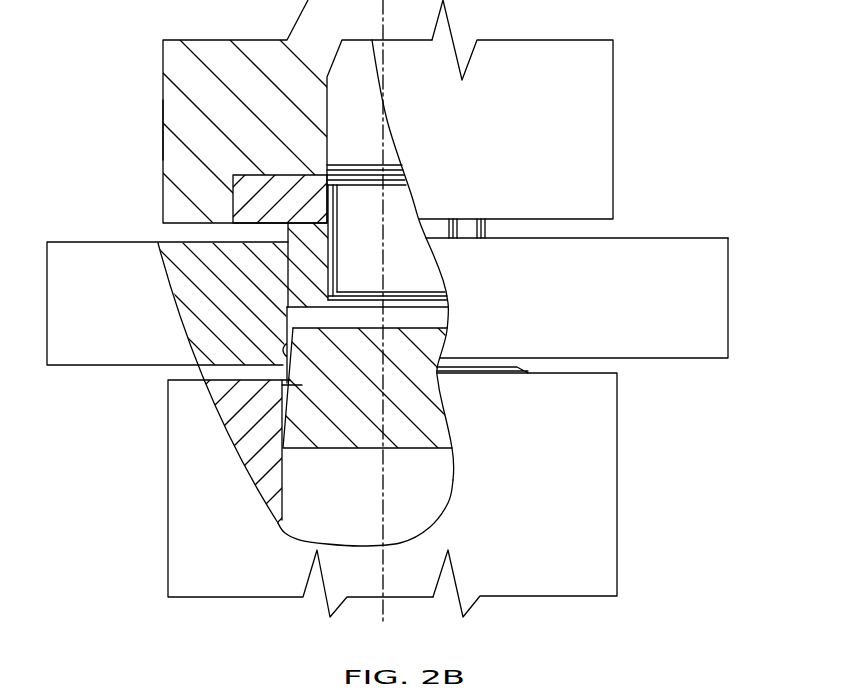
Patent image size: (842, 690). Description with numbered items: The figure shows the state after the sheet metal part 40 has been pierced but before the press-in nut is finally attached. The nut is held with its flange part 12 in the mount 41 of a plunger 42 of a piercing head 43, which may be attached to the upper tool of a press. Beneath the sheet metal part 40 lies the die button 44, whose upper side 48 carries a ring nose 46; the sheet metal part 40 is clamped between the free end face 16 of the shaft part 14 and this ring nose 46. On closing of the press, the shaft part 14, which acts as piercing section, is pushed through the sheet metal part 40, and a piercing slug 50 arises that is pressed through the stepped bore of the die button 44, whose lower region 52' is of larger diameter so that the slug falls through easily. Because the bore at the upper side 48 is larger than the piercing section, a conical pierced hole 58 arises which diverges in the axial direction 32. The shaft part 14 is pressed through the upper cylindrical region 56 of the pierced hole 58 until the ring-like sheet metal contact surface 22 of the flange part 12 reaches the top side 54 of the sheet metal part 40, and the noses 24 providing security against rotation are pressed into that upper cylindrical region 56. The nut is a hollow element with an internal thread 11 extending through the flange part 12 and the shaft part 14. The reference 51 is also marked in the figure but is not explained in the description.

The flange part 12 is at (163, 97).
The plunger 42 is at (163, 148).
The mount 41 is at (231, 195).
The axial direction 32 is at (390, 26).
The piercing head 43 is at (615, 109).
The noses providing security against rotation 24 is at (488, 221).
The top side of the sheet metal part 54 is at (671, 236).
The sheet metal part 40 is at (730, 298).
The internal thread 11 is at (340, 207).
The shaft part 14 is at (305, 287).
The pierced hole 58 is at (444, 311).
The sheet metal contact surface 22 is at (275, 229).
The upper cylindrical region of the piercing hole 56 is at (290, 272).
The shoulder 51 is at (283, 363).
The free end face of the shaft part 16 is at (301, 309).
The upper side of the die button 48 is at (572, 363).
The ring nose 46 is at (268, 373).
The piercing slug 50 is at (335, 450).
The lower region of the bore 52' is at (365, 513).
The die button 44 is at (620, 485).